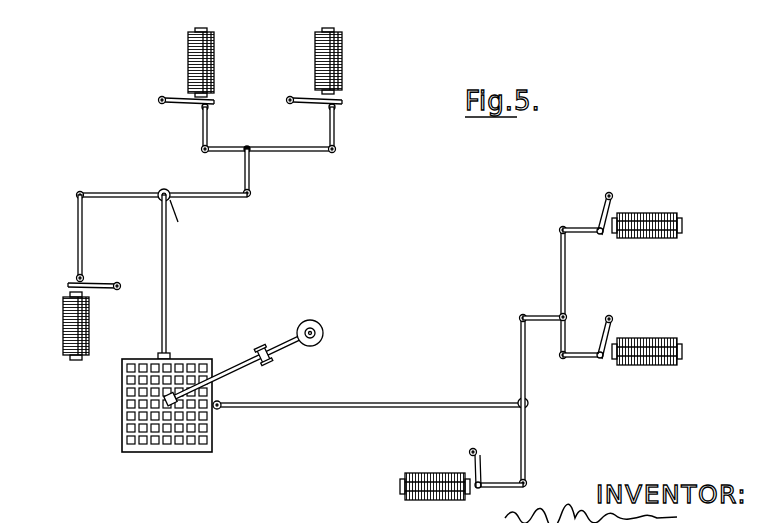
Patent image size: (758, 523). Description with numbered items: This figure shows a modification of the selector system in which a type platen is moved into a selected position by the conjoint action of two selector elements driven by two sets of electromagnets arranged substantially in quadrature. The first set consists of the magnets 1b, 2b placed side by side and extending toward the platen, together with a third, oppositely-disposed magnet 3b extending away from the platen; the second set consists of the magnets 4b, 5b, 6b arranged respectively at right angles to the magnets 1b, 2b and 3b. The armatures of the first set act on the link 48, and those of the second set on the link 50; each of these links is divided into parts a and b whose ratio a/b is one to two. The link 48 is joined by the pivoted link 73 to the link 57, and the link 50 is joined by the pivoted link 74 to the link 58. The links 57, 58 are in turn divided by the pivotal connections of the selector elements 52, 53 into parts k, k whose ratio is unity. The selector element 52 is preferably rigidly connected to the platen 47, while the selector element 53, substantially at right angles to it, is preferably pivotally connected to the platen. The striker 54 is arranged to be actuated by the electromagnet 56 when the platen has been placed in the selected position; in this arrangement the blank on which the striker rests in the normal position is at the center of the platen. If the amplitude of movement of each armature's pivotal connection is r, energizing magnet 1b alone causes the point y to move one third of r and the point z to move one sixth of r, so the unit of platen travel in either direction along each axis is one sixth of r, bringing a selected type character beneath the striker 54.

The magnet 1b is at (328, 69).
The magnet 2b is at (204, 69).
The magnet 3b is at (79, 277).
The magnet 4b is at (622, 211).
The magnet 5b is at (622, 341).
The magnet 6b is at (461, 473).
The link 48 is at (283, 151).
The link 73 is at (250, 180).
The link 57 is at (207, 197).
The selector element 52 is at (170, 285).
The perforated plate 47 is at (197, 358).
The striker 54 is at (237, 369).
The electromagnet 56 is at (322, 326).
The selector element 53 is at (388, 403).
The link 58 is at (521, 347).
The link 74 is at (538, 317).
The link 50 is at (560, 288).
The part of link a is at (405, 233).
The part of link b is at (435, 200).
The part of link k is at (331, 305).
The point y is at (262, 205).
The point z is at (176, 222).